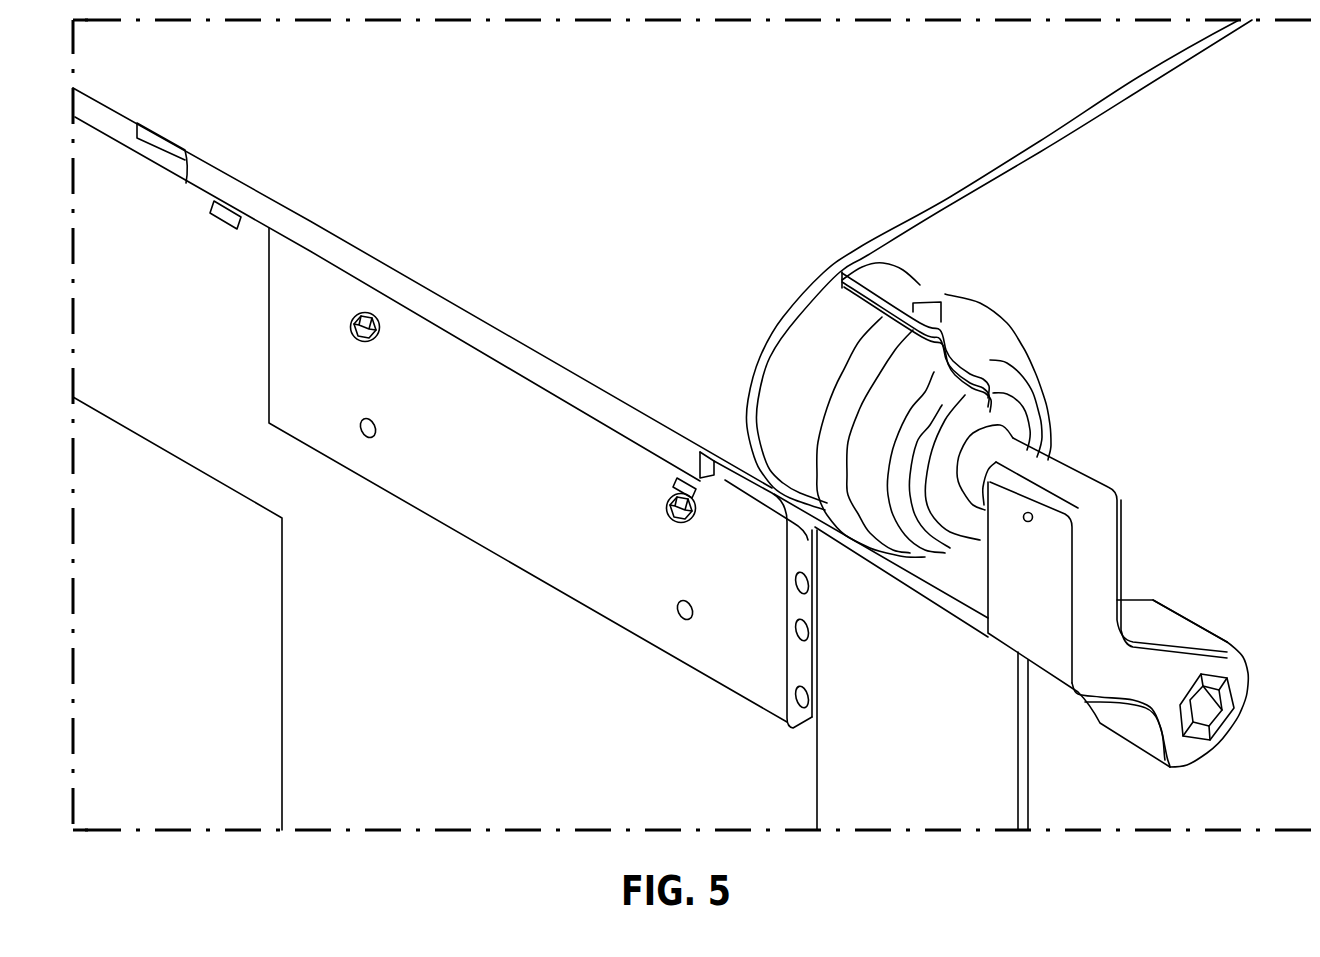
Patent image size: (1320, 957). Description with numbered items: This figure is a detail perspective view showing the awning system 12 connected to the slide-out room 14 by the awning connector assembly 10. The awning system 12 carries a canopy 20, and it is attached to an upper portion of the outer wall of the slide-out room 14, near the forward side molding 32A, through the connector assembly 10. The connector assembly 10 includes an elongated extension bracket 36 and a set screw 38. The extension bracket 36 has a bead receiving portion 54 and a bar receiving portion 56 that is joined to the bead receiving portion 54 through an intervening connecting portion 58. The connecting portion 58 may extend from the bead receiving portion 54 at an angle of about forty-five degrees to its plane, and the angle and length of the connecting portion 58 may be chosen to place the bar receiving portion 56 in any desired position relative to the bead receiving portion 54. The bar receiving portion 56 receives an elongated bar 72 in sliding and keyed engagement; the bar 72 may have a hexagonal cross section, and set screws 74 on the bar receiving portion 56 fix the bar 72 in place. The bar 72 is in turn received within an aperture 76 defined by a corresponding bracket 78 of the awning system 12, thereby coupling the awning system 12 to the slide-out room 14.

The awning connector assembly 10 is at (495, 630).
The awning system 12 is at (1108, 428).
The slide-out room 14 is at (458, 800).
The canopy 20 is at (893, 285).
The forward side molding 32A is at (1025, 752).
The extension bracket 36 is at (750, 678).
The set screw 38 is at (352, 322).
The bead receiving portion 54 is at (486, 511).
The bar receiving portion 56 is at (512, 357).
The connecting portion 58 is at (724, 486).
The elongated bar 72 is at (1152, 607).
The set screw 74 is at (213, 208).
The aperture 76 is at (1214, 722).
The bracket 78 is at (1170, 662).